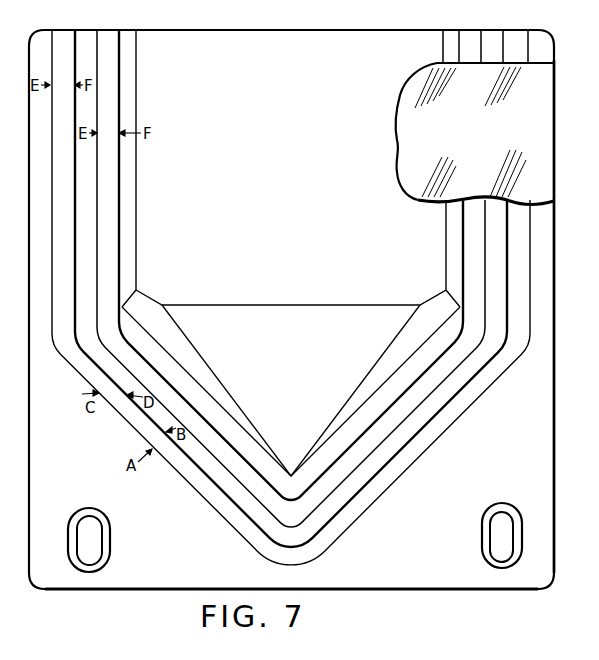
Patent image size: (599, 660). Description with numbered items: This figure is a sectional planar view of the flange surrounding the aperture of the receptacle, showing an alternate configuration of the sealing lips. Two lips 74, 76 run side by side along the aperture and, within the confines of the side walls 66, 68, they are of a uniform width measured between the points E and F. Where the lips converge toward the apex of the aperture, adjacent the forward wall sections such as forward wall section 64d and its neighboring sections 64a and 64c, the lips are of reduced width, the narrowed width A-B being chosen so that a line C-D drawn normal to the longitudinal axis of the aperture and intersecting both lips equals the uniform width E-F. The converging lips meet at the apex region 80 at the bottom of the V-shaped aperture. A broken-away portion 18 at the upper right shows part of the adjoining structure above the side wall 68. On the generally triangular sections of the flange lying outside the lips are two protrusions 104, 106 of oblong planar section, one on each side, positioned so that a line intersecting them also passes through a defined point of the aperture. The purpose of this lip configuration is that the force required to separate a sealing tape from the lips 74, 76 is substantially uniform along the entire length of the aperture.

The workpiece (glass sheet) broken-away portion 18 is at (400, 149).
The side wall 66 is at (137, 212).
The side wall 68 is at (445, 280).
The lip 74 is at (280, 265).
The lip 76 is at (280, 288).
The right edge of triangular opening 64a is at (392, 370).
The triangular opening 64c is at (311, 424).
The forward wall section 64d is at (205, 368).
The apex of V-shaped channel 80 is at (291, 308).
The protrusion 104 is at (90, 557).
The protrusion 106 is at (500, 553).